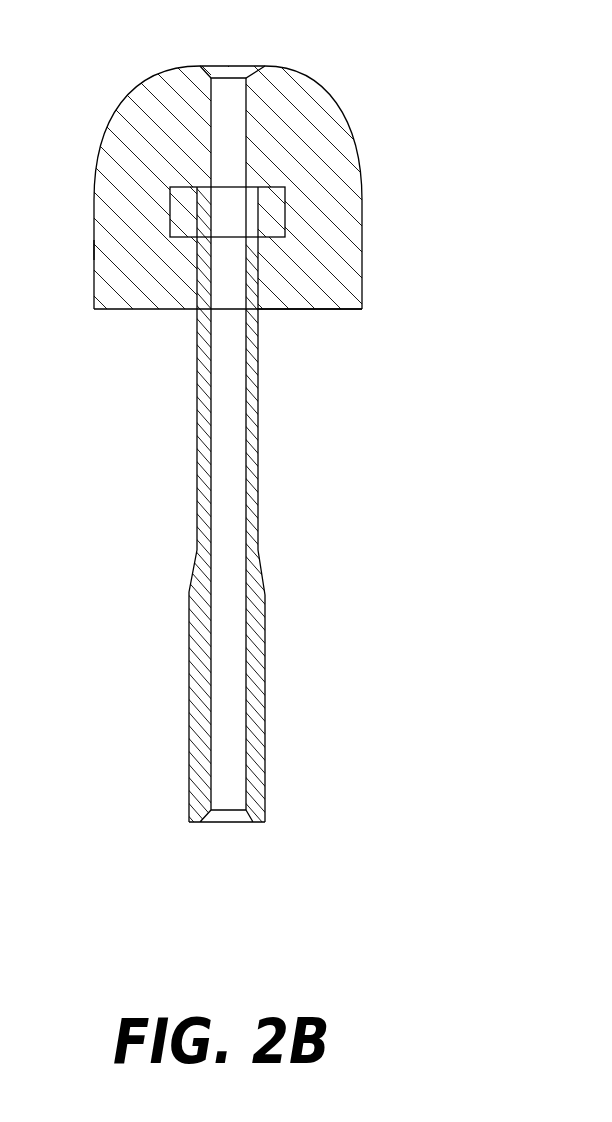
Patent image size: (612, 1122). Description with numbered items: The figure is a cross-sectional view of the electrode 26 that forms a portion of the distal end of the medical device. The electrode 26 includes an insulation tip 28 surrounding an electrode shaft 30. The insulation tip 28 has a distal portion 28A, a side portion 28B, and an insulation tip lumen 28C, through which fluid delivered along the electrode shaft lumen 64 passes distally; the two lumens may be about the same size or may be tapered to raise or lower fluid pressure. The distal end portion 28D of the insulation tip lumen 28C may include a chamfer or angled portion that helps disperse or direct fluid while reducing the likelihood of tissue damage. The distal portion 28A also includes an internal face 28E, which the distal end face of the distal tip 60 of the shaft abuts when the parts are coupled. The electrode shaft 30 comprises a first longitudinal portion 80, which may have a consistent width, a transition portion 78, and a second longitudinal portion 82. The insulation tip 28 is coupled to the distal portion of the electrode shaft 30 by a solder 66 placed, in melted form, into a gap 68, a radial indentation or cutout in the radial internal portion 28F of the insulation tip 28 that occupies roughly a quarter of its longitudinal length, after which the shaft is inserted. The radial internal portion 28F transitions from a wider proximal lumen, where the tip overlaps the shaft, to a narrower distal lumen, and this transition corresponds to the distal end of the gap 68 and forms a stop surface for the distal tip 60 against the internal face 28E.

The electrode 26 is at (322, 415).
The insulation tip 28 is at (368, 162).
The distal portion of insulation tip 28A is at (318, 92).
The side portion of insulation tip 28B is at (364, 288).
The insulation tip lumen 28C is at (218, 93).
The distal end portion of insulation tip lumen 28D is at (225, 67).
The internal face 28E is at (180, 187).
The radial internal portion of insulation tip 28F is at (260, 276).
The electrode shaft 30 is at (259, 500).
The distal tip 60 is at (197, 250).
The electrode shaft lumen 64 is at (233, 763).
The solder 66 is at (177, 220).
The gap 68 is at (160, 235).
The transition portion 78 is at (265, 583).
The first longitudinal portion 80 is at (258, 360).
The second longitudinal portion 82 is at (265, 690).